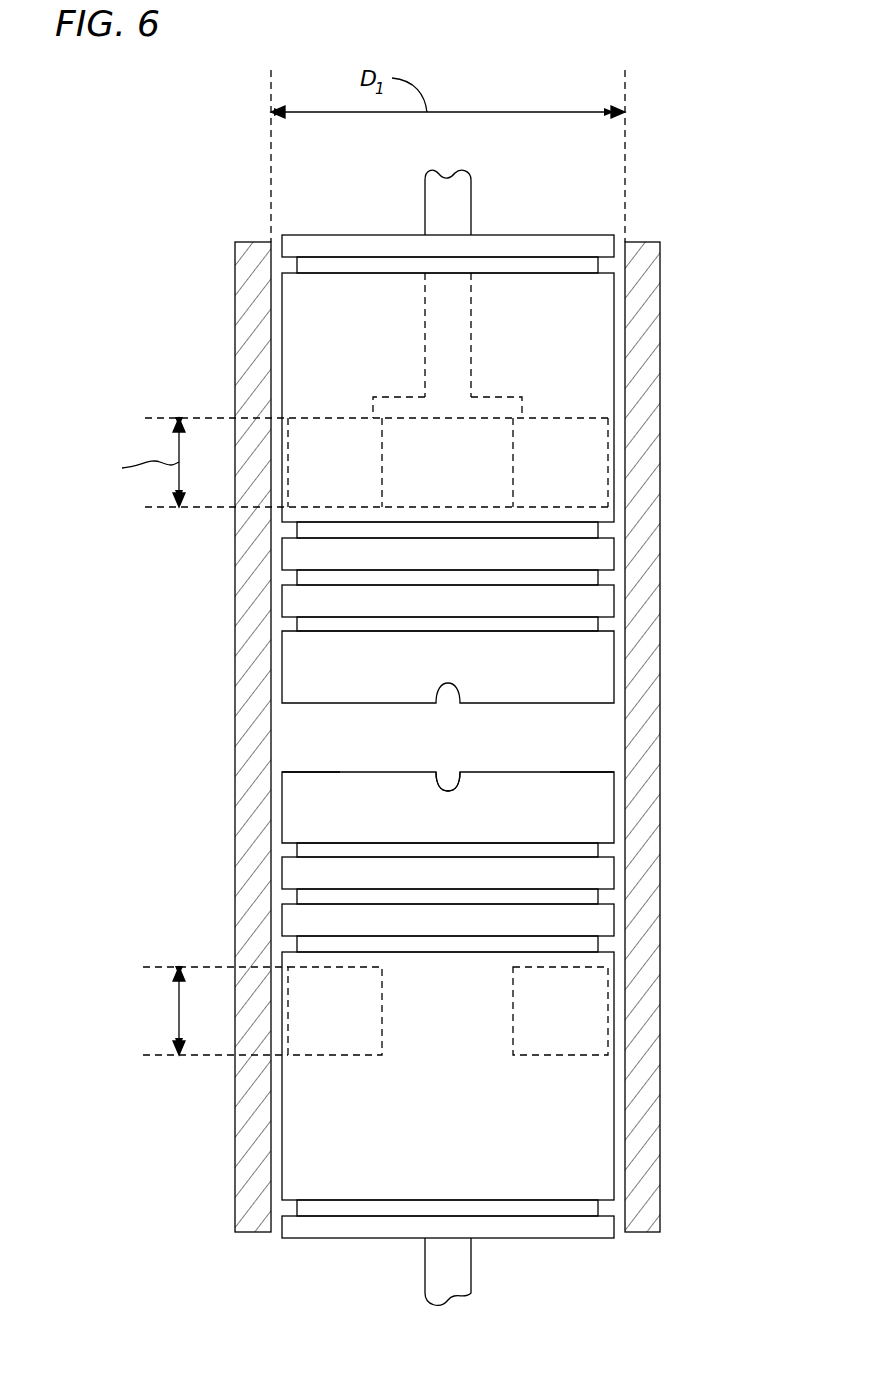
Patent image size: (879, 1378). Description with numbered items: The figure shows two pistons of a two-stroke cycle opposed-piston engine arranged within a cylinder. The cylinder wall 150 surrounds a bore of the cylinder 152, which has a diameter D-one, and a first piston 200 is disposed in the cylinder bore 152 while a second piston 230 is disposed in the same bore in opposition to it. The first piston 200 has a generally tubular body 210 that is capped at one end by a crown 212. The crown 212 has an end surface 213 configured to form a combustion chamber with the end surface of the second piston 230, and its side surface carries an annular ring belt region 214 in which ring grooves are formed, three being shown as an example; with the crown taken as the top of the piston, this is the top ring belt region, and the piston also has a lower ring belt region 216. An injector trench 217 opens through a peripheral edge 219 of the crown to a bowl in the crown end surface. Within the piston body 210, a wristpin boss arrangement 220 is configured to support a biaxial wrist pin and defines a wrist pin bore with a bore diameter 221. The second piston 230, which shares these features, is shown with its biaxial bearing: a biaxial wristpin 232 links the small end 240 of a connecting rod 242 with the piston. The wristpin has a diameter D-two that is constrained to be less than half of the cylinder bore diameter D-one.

The cylinder wall 150 is at (660, 345).
The bore of the cylinder 152 is at (627, 323).
The first piston 200 is at (442, 731).
The tubular body 210 is at (282, 1143).
The crown 212 is at (614, 805).
The end surface 213 is at (580, 772).
The annular ring belt region 214 is at (220, 842).
The lower ring belt region 216 is at (588, 1181).
The injector trench 217 is at (458, 770).
The peripheral edge 219 is at (300, 771).
The wristpin boss arrangement 220 is at (557, 1047).
The bore diameter 221 is at (179, 1010).
The second piston 230 is at (590, 383).
The biaxial wristpin 232 is at (600, 466).
The small end of a connecting rod 240 is at (400, 397).
The connecting rod 242 is at (425, 202).